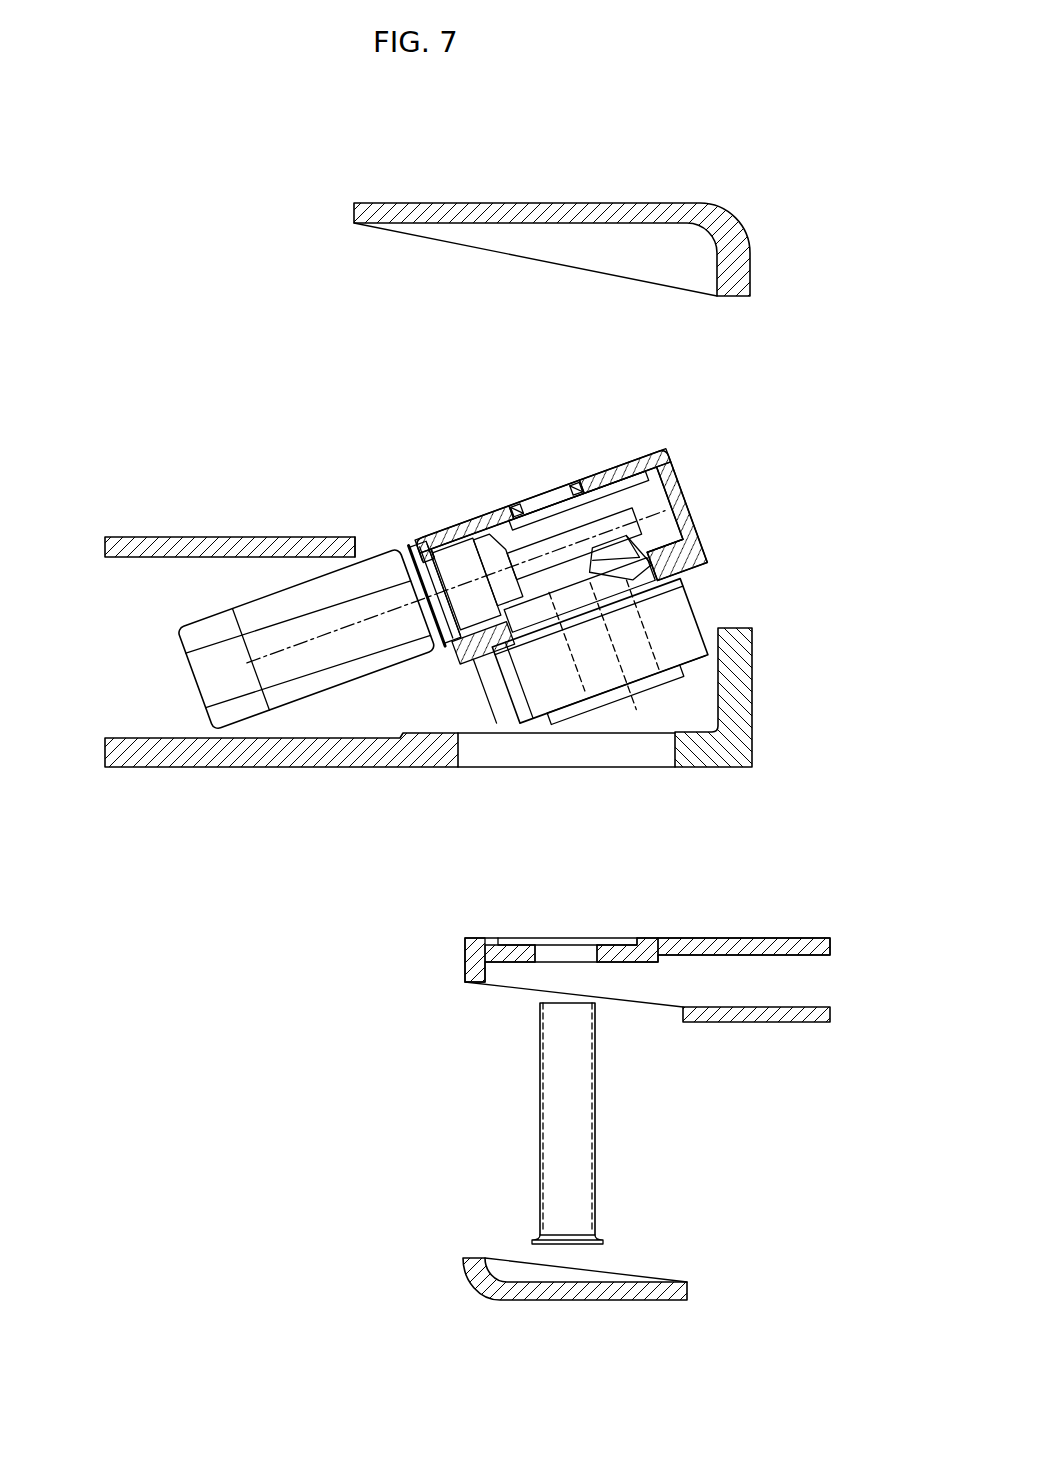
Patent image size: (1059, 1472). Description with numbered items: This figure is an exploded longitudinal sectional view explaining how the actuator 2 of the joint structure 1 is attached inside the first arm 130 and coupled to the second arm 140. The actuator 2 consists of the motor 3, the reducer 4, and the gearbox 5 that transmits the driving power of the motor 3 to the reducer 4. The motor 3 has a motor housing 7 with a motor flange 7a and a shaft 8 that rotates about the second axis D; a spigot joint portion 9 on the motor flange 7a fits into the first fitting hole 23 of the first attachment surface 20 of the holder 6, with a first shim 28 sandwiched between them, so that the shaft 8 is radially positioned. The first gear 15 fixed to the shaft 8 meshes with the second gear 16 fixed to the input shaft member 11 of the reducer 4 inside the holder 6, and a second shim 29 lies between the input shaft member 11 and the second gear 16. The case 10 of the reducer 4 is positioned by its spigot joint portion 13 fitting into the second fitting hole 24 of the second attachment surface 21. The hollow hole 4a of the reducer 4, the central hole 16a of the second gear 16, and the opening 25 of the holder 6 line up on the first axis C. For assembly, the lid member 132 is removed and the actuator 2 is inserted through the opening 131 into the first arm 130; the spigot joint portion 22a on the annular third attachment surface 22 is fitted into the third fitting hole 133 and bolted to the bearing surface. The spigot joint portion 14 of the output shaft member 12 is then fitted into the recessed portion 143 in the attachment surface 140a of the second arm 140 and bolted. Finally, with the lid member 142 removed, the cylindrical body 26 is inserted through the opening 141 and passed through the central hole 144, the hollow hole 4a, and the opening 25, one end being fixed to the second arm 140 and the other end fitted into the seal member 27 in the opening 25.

The joint structure 1 is at (141, 195).
The actuator 2 is at (432, 453).
The motor 3 is at (166, 658).
The reducer 4 is at (731, 592).
The hollow hole 4a is at (608, 720).
The gearbox 5 is at (635, 401).
The holder 6 is at (609, 450).
The motor housing 7 is at (288, 735).
The motor flange 7a is at (423, 568).
The shaft 8 is at (436, 590).
The spigot joint portion 9 is at (453, 652).
The case 10 is at (714, 616).
The input shaft member 11 is at (673, 545).
The output shaft member 12 is at (686, 697).
The spigot joint portion 13 is at (665, 562).
The spigot joint portion 14 is at (684, 672).
The first gear 15 is at (490, 545).
The second gear 16 is at (643, 550).
The central hole 16a is at (587, 547).
The first attachment surface 20 is at (445, 655).
The second attachment surface 21 is at (528, 720).
The third attachment surface 22 is at (487, 652).
The spigot joint portion 22a is at (497, 720).
The first fitting hole 23 is at (398, 573).
The second fitting hole 24 is at (528, 640).
The opening 25 is at (520, 505).
The cylindrical body 26 is at (540, 1163).
The seal member 27 is at (571, 487).
The first shim 28 is at (440, 612).
The second shim 29 is at (540, 590).
The first arm 130 is at (135, 520).
The opening 131 is at (367, 540).
The lid member 132 is at (578, 203).
The third fitting hole 133 is at (690, 765).
The second arm 140 is at (793, 1038).
The attachment surface 140a is at (615, 940).
The opening 141 is at (678, 1022).
The lid member 142 is at (583, 1300).
The recessed portion 143 is at (505, 938).
The central hole 144 is at (548, 962).
The first axis C is at (612, 730).
The second axis D is at (410, 600).